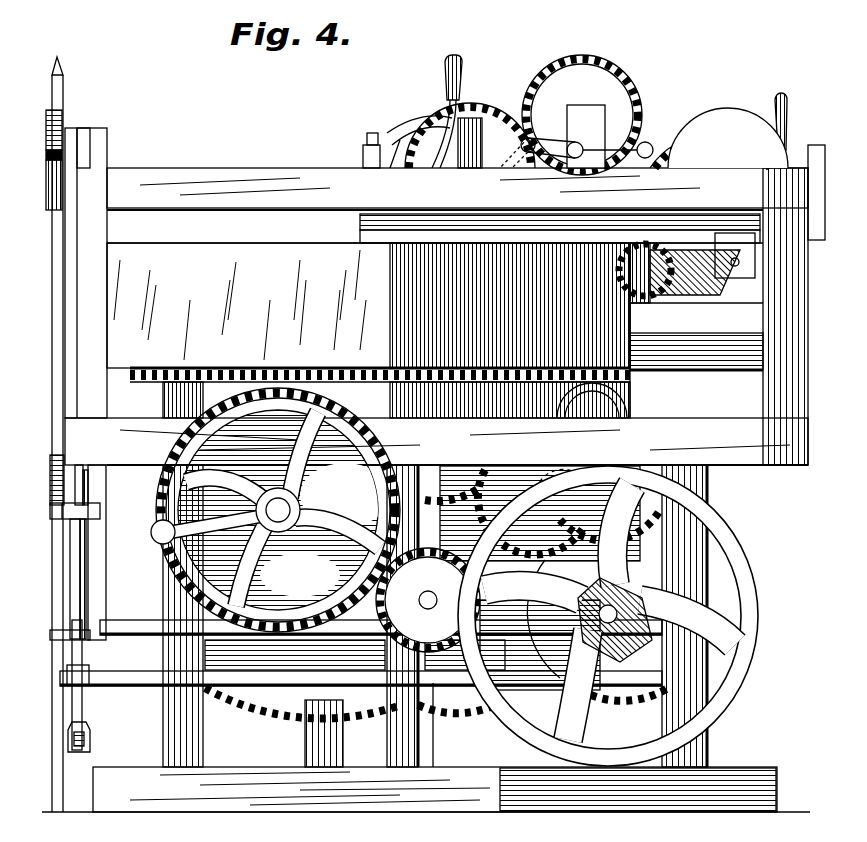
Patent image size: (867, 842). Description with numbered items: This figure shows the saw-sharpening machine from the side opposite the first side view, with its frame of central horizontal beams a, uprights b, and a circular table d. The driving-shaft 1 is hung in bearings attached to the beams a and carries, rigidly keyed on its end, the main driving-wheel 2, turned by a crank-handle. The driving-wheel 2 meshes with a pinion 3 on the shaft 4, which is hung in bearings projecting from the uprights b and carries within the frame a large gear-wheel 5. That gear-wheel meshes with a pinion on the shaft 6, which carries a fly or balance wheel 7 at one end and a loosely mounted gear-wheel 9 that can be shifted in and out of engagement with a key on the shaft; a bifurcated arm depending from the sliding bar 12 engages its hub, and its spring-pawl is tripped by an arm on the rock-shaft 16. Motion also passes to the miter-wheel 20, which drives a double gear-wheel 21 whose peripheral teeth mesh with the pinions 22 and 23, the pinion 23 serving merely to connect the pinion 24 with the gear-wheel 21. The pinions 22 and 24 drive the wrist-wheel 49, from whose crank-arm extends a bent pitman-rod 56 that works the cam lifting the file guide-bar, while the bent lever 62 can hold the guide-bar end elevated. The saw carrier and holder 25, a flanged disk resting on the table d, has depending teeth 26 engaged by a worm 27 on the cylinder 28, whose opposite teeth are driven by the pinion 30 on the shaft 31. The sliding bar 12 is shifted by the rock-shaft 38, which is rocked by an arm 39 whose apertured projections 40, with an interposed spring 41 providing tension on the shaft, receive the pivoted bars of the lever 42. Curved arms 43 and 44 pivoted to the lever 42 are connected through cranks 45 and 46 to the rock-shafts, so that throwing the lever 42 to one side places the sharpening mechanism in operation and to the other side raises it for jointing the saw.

The driving-shaft 1 is at (225, 516).
The main driving-wheel 2 is at (318, 492).
The pinion 3 is at (428, 600).
The shaft 4 is at (428, 612).
The large gear-wheel 5 is at (470, 702).
The shaft 6 is at (614, 620).
The fly or balance wheel 7 is at (748, 648).
The gear-wheel 9 is at (612, 703).
The sliding bar 12 is at (655, 471).
The rock-shaft 16 is at (142, 686).
The miter-wheel 20 is at (693, 300).
The double gear-wheel 21 is at (662, 258).
The pinion 22 is at (682, 120).
The pinion 23 is at (582, 115).
The pinion 24 is at (479, 108).
The saw carrier and holder 25 is at (368, 305).
The depending teeth 26 is at (142, 385).
The worm 27 is at (630, 410).
The cylinder 28 is at (592, 400).
The pinion 30 is at (569, 512).
The shaft 31 is at (530, 485).
The rock-shaft 38 is at (142, 636).
The arm 39 is at (102, 546).
The apertured projections 40 is at (102, 511).
The spring 41 is at (52, 485).
The lever 42 is at (54, 300).
The curved arm 43 is at (72, 535).
The curved arm 44 is at (74, 656).
The crank 45 is at (87, 475).
The crank 46 is at (88, 742).
The wrist-wheel 49 is at (728, 138).
The bent pitman-rod 56 is at (650, 170).
The bent lever 62 is at (447, 82).
The central horizontal beams a is at (457, 448).
The uprights b is at (444, 746).
The circular table d is at (371, 402).